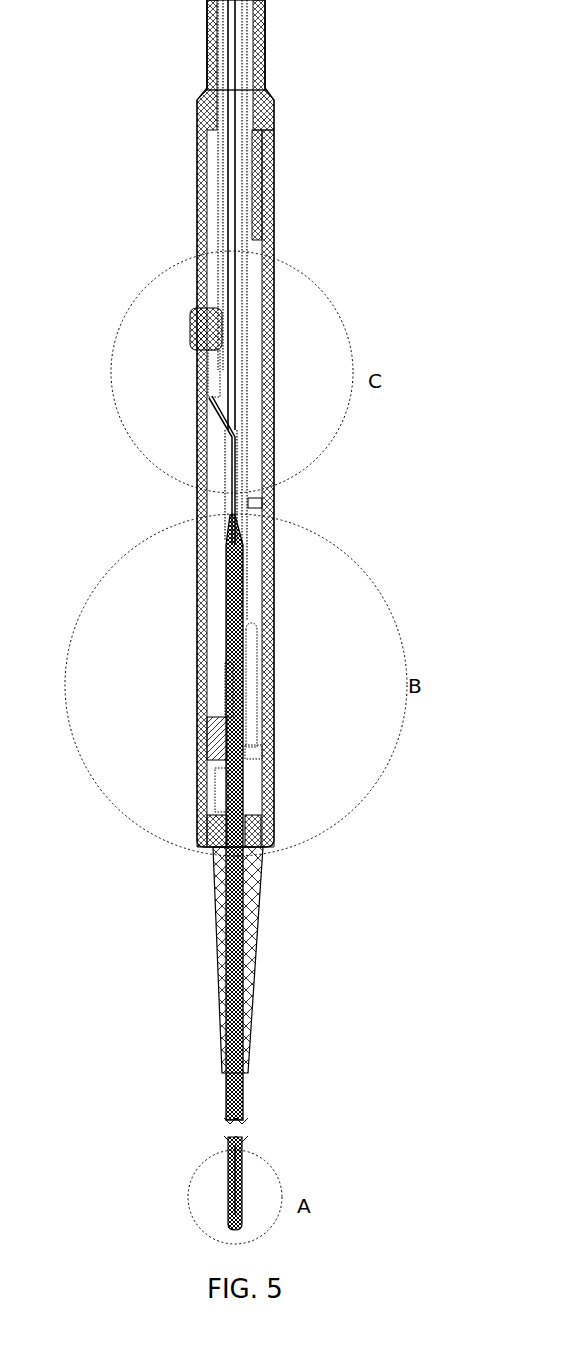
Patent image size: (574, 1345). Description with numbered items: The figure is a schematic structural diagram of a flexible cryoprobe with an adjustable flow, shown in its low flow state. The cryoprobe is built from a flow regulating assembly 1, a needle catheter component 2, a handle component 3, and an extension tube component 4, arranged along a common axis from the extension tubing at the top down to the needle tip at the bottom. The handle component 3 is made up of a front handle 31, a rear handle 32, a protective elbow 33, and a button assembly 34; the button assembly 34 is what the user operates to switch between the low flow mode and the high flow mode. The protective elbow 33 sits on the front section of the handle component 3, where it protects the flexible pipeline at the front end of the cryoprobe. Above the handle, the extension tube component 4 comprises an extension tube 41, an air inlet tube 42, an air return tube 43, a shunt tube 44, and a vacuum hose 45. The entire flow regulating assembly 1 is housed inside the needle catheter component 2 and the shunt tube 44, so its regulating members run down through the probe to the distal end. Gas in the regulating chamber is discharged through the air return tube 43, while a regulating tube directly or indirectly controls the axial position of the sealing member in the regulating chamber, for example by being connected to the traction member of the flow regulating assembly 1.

The flow regulating assembly 1 is at (226, 427).
The needle catheter component 2 is at (228, 1160).
The handle component 3 is at (197, 575).
The extension tube component 4 is at (207, 28).
The front handle 31 is at (198, 727).
The rear handle 32 is at (200, 148).
The protective elbow 33 is at (215, 912).
The button assembly 34 is at (198, 335).
The extension tube 41 is at (263, 27).
The air inlet tube 42 is at (275, 142).
The air return tube 43 is at (245, 82).
The shunt tube 44 is at (263, 503).
The vacuum hose 45 is at (257, 237).